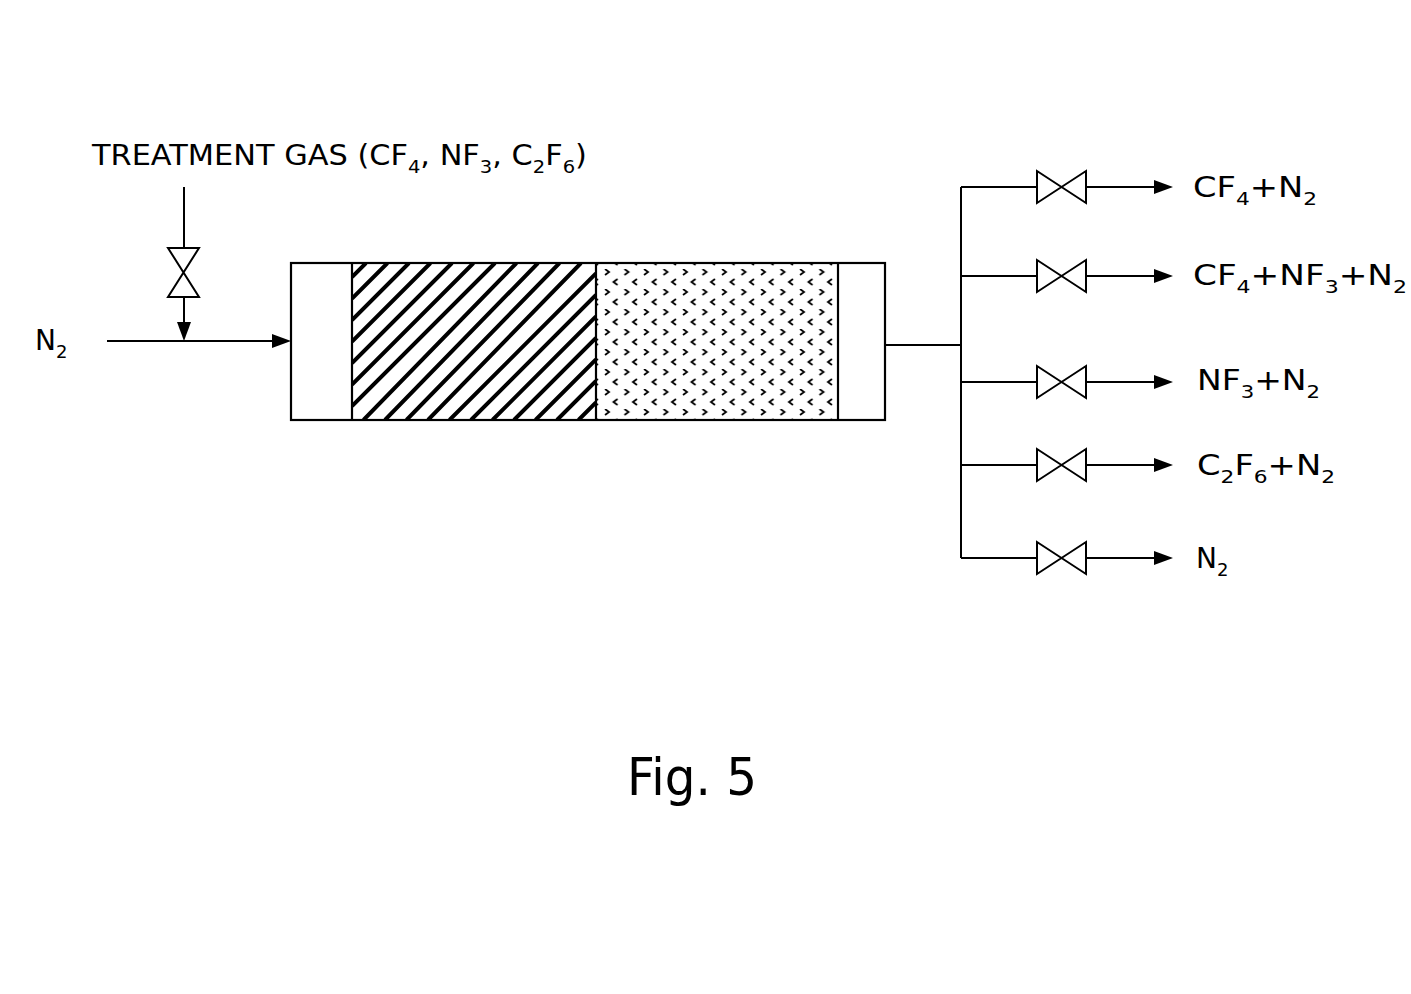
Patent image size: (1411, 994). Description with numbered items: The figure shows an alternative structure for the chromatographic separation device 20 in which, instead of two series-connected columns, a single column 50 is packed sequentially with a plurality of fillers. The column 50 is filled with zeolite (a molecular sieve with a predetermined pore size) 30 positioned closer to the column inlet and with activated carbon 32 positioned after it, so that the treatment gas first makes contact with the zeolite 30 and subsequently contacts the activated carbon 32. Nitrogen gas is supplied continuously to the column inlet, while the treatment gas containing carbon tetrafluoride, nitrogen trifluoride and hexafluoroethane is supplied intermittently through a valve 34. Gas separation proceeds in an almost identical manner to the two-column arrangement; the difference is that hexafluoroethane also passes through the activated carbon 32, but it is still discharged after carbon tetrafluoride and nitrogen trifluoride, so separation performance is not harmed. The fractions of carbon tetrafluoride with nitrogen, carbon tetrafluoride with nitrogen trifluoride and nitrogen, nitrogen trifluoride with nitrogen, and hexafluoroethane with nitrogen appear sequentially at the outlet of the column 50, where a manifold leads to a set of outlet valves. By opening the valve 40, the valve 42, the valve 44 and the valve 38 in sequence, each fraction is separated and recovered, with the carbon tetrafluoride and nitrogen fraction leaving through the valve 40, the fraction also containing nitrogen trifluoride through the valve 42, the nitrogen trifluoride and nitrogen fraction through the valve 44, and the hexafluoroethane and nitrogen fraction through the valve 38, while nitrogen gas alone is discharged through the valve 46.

The chromatographic separation device 20 is at (760, 180).
The zeolite (molecular sieve 13X) 30 is at (475, 388).
The activated carbon 32 is at (720, 388).
The valve 34 is at (163, 264).
The valve 38 is at (1067, 451).
The valve 40 is at (1067, 171).
The valve 42 is at (1067, 255).
The valve 44 is at (1067, 362).
The valve 46 is at (1067, 543).
The column 50 is at (587, 265).